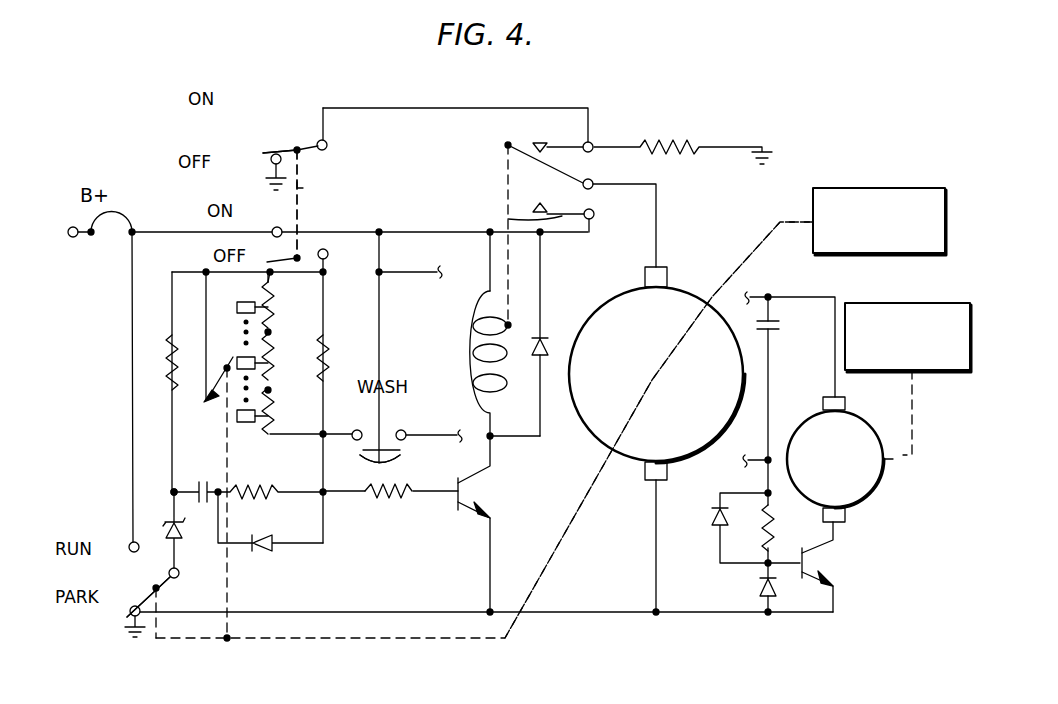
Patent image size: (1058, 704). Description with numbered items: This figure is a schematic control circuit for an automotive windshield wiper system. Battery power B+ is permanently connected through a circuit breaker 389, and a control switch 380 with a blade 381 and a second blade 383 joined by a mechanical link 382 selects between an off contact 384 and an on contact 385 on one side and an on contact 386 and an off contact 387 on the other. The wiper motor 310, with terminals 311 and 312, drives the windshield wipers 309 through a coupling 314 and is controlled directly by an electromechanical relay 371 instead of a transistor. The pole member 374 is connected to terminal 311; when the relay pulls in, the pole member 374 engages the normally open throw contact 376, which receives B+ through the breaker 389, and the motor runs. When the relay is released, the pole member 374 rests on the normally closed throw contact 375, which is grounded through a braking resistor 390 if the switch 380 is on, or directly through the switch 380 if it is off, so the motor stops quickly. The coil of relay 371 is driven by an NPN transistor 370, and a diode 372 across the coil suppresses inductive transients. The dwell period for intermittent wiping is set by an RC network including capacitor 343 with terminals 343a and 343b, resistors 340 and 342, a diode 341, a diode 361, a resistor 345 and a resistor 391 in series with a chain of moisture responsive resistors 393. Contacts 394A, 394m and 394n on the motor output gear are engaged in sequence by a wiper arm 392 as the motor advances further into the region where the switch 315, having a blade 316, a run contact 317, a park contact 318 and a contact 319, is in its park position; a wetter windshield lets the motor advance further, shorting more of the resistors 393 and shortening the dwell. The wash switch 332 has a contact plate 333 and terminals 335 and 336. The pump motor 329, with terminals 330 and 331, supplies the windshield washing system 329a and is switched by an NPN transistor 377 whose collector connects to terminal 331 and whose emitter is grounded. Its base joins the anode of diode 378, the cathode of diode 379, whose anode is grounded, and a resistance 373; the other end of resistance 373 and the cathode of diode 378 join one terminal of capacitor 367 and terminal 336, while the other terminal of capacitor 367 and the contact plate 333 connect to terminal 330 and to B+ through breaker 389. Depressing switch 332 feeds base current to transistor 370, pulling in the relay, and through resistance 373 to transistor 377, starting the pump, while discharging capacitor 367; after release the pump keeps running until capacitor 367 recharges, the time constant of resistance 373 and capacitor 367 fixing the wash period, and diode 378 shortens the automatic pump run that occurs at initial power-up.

The windshield wipers 309 is at (881, 188).
The wiper motor 310 is at (596, 436).
The terminal 311 is at (668, 272).
The wiper motor terminal 312 is at (668, 473).
The mechanical coupling 314 is at (552, 571).
The switch 315 is at (145, 572).
The park switch blade 316 is at (162, 588).
The run contact 317 is at (132, 542).
The park contact 318 is at (128, 614).
The switch contact 319 is at (180, 573).
The pump motor 329 is at (886, 481).
The windshield washing system 329a is at (899, 303).
The terminal 330 is at (845, 404).
The terminal 331 is at (848, 515).
The wash switch 332 is at (392, 462).
The contact plate 333 is at (363, 450).
The wash switch contact 335 is at (358, 430).
The terminal 336 is at (401, 430).
The resistor 340 is at (275, 470).
The diode 341 is at (272, 549).
The resistor 342 is at (393, 503).
The capacitor 343 is at (213, 470).
The capacitor terminal 343a is at (173, 491).
The capacitor terminal 343b is at (230, 498).
The resistor 345 is at (173, 339).
The diode 361 is at (172, 520).
The capacitor 367 is at (777, 331).
The NPN bipolar transistor 370 is at (474, 490).
The electromechanical relay 371 is at (471, 336).
The diode 372 is at (549, 341).
The resistance 373 is at (776, 527).
The pole member 374 is at (540, 171).
The normally closed throw contact member 375 is at (558, 145).
The normally open throw contact member 376 is at (530, 217).
The NPN bipolar transistor 377 is at (824, 560).
The diode 378 is at (712, 514).
The diode 379 is at (760, 587).
The control switch 380 is at (274, 106).
The switch blade 381 is at (292, 150).
The mechanical link 382 is at (305, 190).
The switch blade 383 is at (300, 257).
The off contact 384 is at (270, 162).
The on contact 385 is at (329, 141).
The on contact 386 is at (278, 227).
The off contact 387 is at (329, 253).
The circuit breaker 389 is at (124, 214).
The braking resistor 390 is at (664, 146).
The resistor 391 is at (329, 336).
The wiper arm 392 is at (231, 358).
The resistors 393 is at (276, 418).
The contact 394n is at (237, 307).
The contact 394m is at (237, 362).
The contact 394A is at (237, 416).